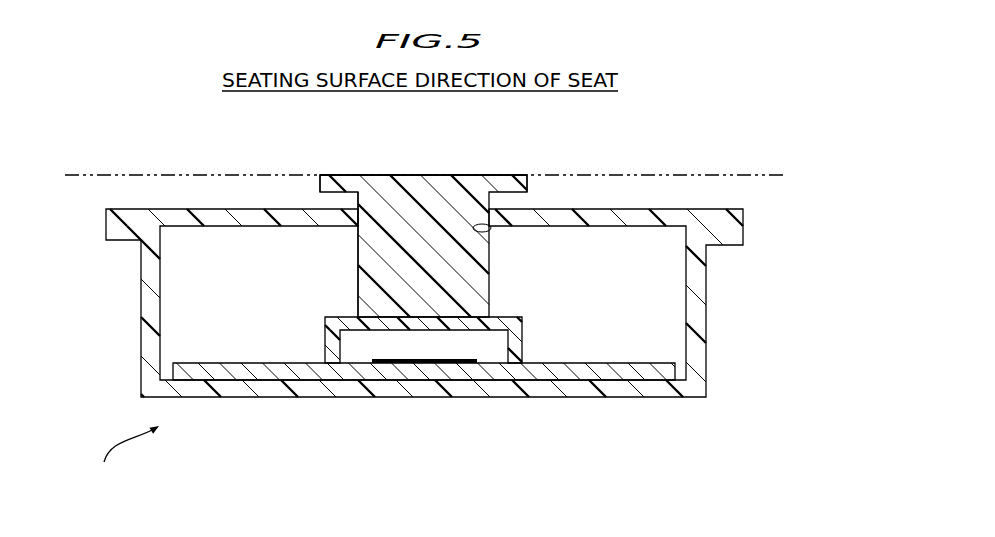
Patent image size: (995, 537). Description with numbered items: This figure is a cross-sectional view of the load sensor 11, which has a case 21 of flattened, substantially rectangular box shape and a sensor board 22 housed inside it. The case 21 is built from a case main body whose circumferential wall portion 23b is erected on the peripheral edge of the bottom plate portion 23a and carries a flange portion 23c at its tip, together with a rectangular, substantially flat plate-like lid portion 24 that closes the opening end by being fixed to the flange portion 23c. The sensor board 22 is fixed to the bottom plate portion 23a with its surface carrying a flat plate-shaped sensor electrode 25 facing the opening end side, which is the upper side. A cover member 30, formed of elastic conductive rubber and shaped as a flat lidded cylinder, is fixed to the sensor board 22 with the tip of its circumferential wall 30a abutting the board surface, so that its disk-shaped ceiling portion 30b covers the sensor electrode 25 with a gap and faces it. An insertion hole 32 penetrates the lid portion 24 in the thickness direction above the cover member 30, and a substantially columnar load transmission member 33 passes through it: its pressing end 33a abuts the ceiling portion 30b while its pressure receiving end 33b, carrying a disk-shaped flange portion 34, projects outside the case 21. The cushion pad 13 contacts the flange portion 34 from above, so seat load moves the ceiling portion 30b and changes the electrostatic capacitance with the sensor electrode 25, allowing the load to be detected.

The load sensor 11 is at (130, 490).
The cushion pad 13 is at (72, 177).
The case 21 is at (707, 398).
The sensor board 22 is at (210, 358).
The bottom plate portion 23a is at (570, 398).
The circumferential wall portion 23b is at (698, 305).
The flange portion 23c is at (118, 243).
The lid portion 24 is at (172, 207).
The sensor electrode 25 is at (424, 352).
The cover member 30 is at (520, 316).
The circumferential wall 30a is at (521, 343).
The ceiling portion 30b is at (367, 323).
The insertion hole 32 is at (490, 232).
The load transmission member 33 is at (357, 258).
The pressing end 33a is at (367, 297).
The pressure receiving end 33b is at (435, 175).
The flange portion 34 is at (527, 184).